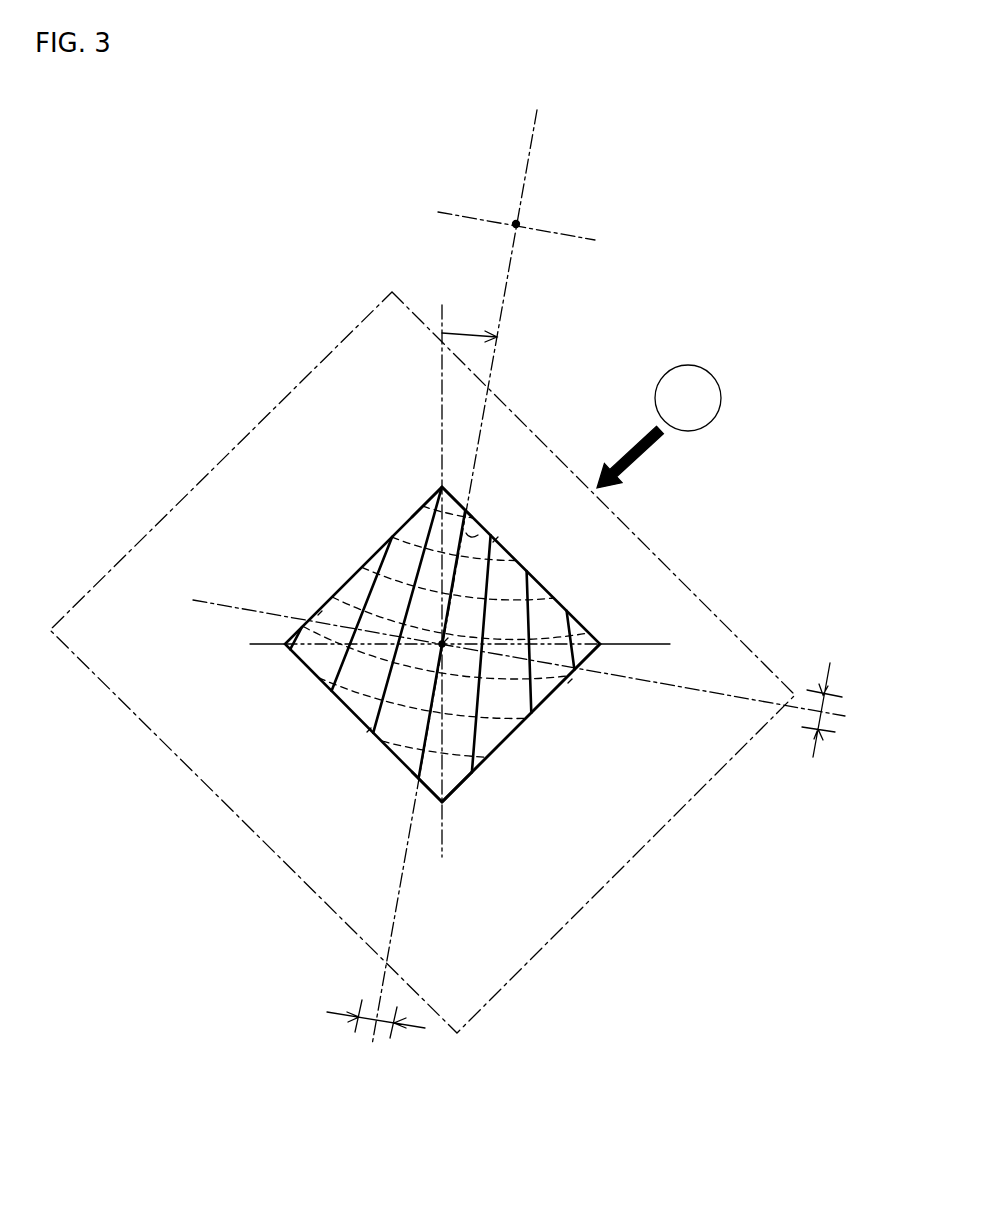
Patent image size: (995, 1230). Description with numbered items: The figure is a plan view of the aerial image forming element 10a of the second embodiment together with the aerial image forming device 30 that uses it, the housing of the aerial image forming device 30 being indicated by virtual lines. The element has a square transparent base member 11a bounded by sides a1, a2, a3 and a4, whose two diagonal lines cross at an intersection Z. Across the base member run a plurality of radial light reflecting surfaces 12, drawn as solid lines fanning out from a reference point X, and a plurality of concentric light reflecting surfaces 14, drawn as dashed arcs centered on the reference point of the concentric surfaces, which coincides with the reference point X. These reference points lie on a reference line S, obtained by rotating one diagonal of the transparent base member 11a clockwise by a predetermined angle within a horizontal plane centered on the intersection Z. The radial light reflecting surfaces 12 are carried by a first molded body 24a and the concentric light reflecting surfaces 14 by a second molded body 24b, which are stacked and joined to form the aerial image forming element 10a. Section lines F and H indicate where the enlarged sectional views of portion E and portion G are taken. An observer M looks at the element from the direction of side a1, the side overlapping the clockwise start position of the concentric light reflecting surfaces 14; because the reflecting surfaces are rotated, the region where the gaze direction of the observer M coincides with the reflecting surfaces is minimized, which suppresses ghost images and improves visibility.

The aerial image forming element 10a is at (598, 586).
The transparent base member 11a is at (526, 745).
The radial light reflecting surfaces 12 is at (338, 667).
The concentric light reflecting surfaces 14 is at (327, 633).
The first molded body 24a is at (489, 786).
The second molded body 24b is at (421, 486).
The aerial image forming device 30 is at (720, 609).
The section line H- H is at (537, 110).
The section line F- F is at (205, 573).
The portion G- G is at (832, 717).
The portion E- E is at (376, 1035).
The observer M is at (659, 426).
The reference point X is at (517, 224).
The reference line S is at (466, 533).
The intersection Z is at (442, 644).
The side a1 is at (493, 542).
The side a2 is at (318, 615).
The side a3 is at (367, 732).
The side a4 is at (568, 683).